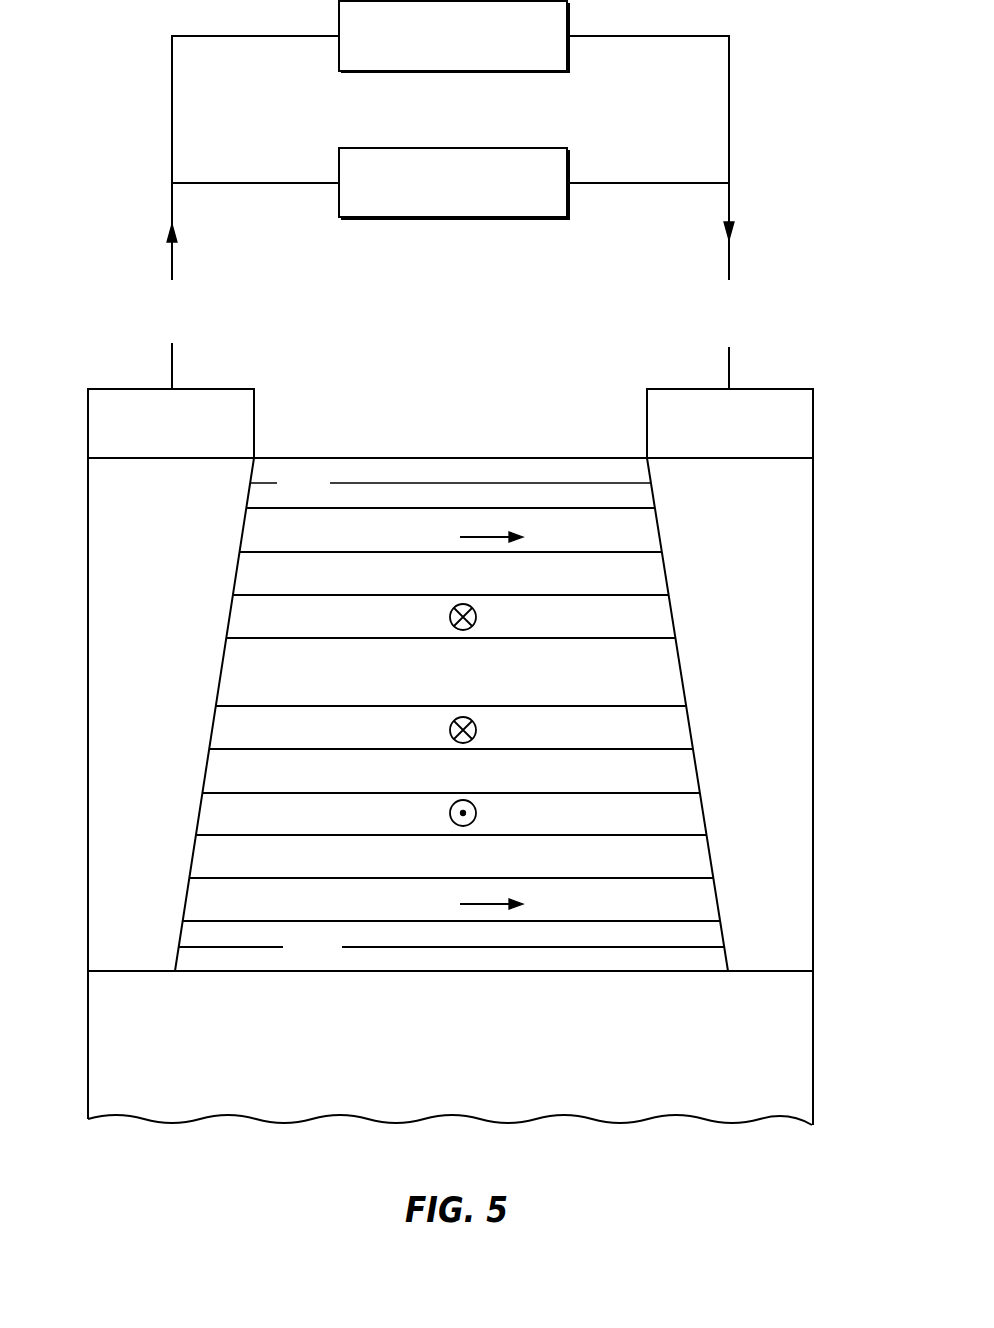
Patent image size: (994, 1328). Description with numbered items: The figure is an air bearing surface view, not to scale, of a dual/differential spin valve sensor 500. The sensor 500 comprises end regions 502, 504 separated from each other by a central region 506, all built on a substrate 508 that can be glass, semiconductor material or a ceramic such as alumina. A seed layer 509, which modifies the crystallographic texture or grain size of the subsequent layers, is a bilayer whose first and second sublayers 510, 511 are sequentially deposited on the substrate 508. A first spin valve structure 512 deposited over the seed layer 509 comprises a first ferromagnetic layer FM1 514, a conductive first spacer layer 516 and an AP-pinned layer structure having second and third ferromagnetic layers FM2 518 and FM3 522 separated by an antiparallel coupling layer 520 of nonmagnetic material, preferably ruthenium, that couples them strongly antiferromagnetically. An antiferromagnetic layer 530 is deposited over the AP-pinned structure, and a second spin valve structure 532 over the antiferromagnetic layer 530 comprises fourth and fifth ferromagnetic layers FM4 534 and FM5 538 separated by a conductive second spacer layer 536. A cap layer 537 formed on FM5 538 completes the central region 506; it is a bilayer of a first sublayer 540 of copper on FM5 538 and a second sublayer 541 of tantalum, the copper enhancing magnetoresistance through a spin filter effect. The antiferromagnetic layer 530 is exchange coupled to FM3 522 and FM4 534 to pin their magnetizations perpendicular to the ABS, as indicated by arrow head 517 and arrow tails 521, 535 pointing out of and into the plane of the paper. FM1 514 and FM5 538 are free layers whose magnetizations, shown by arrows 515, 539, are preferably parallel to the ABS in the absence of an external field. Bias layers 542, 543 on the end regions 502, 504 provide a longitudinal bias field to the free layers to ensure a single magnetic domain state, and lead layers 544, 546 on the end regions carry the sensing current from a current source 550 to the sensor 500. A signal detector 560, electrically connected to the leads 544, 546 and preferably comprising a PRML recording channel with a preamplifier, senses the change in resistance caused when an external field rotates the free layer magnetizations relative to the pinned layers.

The dual/differential spin valve sensor 500 is at (452, 789).
The end region 502 is at (253, 339).
The end region 504 is at (813, 339).
The central region 506 is at (645, 374).
The substrate 508 is at (813, 1074).
The seed layer 509 is at (170, 922).
The first sublayer 510 is at (727, 962).
The second sublayer 511 is at (722, 933).
The first spin valve structure 512 is at (170, 705).
The first ferromagnetic layer (FM1) 514 is at (716, 895).
The arrow 515 is at (460, 904).
The first spacer layer 516 is at (709, 853).
The arrow head 517 is at (477, 813).
The second ferromagnetic layer (FM2) 518 is at (703, 813).
The antiparallel coupling (APC) layer 520 is at (696, 770).
The arrow tail 521 is at (477, 730).
The third ferromagnetic layer (FM3) 522 is at (689, 727).
The antiferromagnetic (AFM) layer 530 is at (681, 673).
The second spin valve structure 532 is at (200, 515).
The fourth ferromagnetic layer (FM4) 534 is at (672, 618).
The arrow tail 535 is at (477, 617).
The second spacer layer 536 is at (665, 573).
The fifth ferromagnetic layer (FM5) 538 is at (659, 533).
The arrow 539 is at (460, 537).
The first sublayer 540 is at (654, 500).
The second sublayer 541 is at (650, 474).
The cap layer 537 is at (210, 458).
The bias layer 542 is at (88, 570).
The bias layer 543 is at (813, 738).
The lead layer 544 is at (88, 421).
The lead layer 546 is at (813, 425).
The current source 550 is at (552, 218).
The signal detector 560 is at (552, 72).